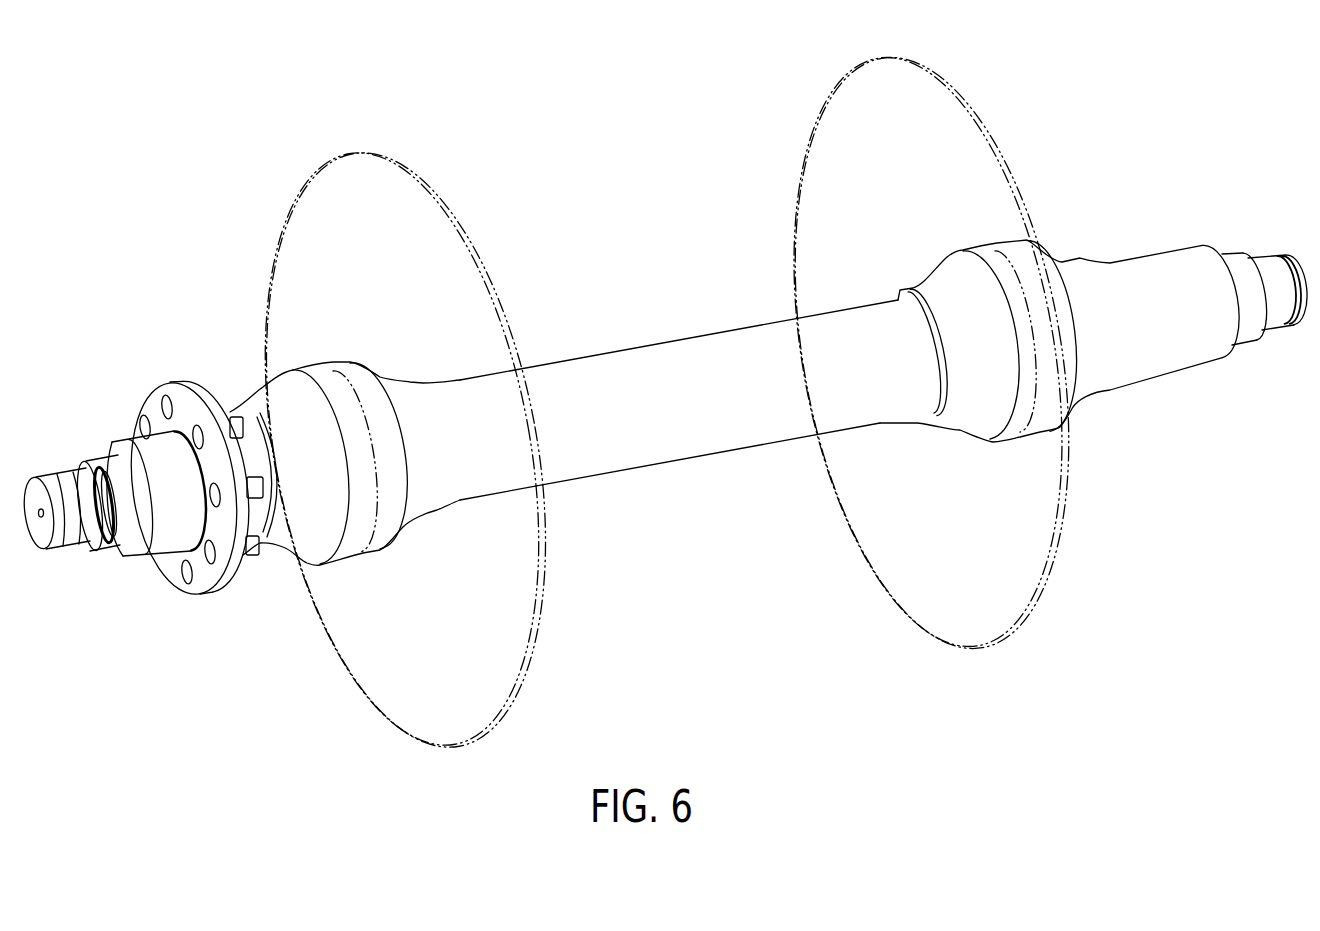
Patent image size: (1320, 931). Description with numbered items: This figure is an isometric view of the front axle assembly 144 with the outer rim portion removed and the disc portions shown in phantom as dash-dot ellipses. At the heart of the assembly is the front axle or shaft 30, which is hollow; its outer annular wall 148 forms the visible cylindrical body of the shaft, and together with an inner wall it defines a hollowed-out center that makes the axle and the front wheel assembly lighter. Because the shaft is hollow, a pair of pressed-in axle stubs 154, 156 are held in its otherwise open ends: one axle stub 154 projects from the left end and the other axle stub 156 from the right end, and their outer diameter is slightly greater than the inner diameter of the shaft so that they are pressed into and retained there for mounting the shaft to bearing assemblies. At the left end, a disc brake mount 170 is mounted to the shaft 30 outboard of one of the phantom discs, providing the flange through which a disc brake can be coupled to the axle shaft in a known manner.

The front axle assembly 144 is at (1159, 141).
The front axle or shaft 30 is at (768, 402).
The outer annular wall 148 is at (688, 450).
The axle stub 154 is at (78, 548).
The axle stub 156 is at (1277, 326).
The disc brake mount 170 is at (207, 575).